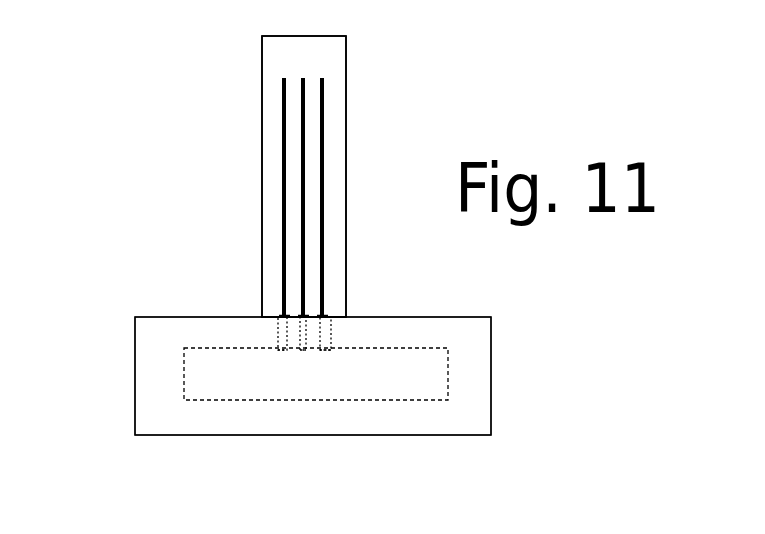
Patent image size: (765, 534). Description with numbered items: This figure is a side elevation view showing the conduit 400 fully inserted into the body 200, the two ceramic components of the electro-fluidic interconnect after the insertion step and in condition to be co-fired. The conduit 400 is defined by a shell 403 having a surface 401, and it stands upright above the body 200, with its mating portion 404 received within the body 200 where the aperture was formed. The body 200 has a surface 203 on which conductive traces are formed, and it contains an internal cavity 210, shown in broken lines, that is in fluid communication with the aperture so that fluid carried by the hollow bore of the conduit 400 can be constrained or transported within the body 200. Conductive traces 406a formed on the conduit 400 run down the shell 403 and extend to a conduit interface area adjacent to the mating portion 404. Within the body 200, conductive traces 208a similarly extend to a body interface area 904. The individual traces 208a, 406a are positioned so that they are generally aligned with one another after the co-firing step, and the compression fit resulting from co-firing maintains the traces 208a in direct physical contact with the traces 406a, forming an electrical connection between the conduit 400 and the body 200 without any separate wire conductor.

The shell 403 is at (275, 36).
The surface 401 is at (332, 52).
The conductive traces 406a is at (288, 260).
The conductive traces 208a is at (323, 316).
The surface 203 is at (425, 317).
The internal cavity 210 is at (448, 360).
The mating portion 404 is at (277, 342).
The body interface area 904 is at (320, 350).
The conduit 400 is at (214, 140).
The body 200 is at (121, 478).